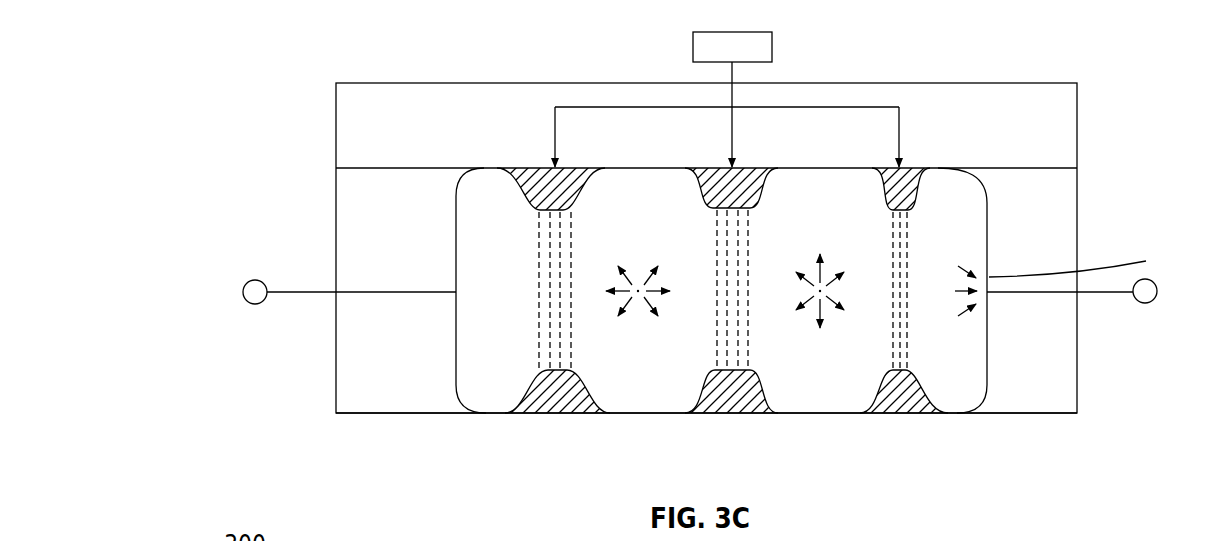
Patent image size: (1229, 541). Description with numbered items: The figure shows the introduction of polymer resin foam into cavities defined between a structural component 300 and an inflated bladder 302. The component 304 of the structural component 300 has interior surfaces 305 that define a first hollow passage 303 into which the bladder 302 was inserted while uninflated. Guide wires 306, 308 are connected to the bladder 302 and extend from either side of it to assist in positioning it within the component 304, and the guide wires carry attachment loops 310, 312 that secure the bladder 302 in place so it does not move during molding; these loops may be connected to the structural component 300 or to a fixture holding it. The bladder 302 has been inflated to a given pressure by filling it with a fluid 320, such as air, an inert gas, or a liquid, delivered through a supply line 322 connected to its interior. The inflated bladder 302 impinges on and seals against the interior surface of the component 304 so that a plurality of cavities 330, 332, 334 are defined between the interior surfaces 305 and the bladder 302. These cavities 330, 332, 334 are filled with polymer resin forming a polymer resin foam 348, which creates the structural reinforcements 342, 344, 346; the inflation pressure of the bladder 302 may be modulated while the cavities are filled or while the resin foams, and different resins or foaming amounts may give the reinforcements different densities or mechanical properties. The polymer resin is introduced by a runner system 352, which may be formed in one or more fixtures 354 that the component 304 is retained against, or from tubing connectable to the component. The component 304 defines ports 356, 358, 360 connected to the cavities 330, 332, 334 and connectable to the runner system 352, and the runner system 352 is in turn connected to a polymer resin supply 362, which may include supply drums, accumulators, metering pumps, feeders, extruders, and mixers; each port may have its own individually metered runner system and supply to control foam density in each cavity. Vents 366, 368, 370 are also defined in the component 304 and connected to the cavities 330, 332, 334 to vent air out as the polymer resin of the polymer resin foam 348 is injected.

The structural component 300 is at (302, 48).
The bladder 302 is at (455, 366).
The first hollow passage 303 is at (358, 368).
The component 304 is at (413, 168).
The interior surfaces 305 is at (363, 169).
The guide wire 306 is at (303, 294).
The guide wire 308 is at (1020, 294).
The attachment loop 310 is at (252, 281).
The attachment loop 312 is at (1148, 304).
The fluid 320 is at (619, 227).
The supply line 322 is at (1113, 268).
The cavity 330 is at (525, 170).
The cavity 332 is at (697, 175).
The cavity 334 is at (868, 178).
The structural reinforcement 342 is at (577, 184).
The structural reinforcement 344 is at (752, 186).
The structural reinforcement 346 is at (918, 186).
The polymer resin foam 348 is at (530, 201).
The runner system 352 is at (622, 62).
The fixture 354 is at (1077, 128).
The port 356 is at (552, 156).
The port 358 is at (729, 158).
The port 360 is at (896, 158).
The polymer resin supply 362 is at (693, 46).
The vent 366 is at (556, 416).
The vent 368 is at (732, 416).
The vent 370 is at (899, 416).